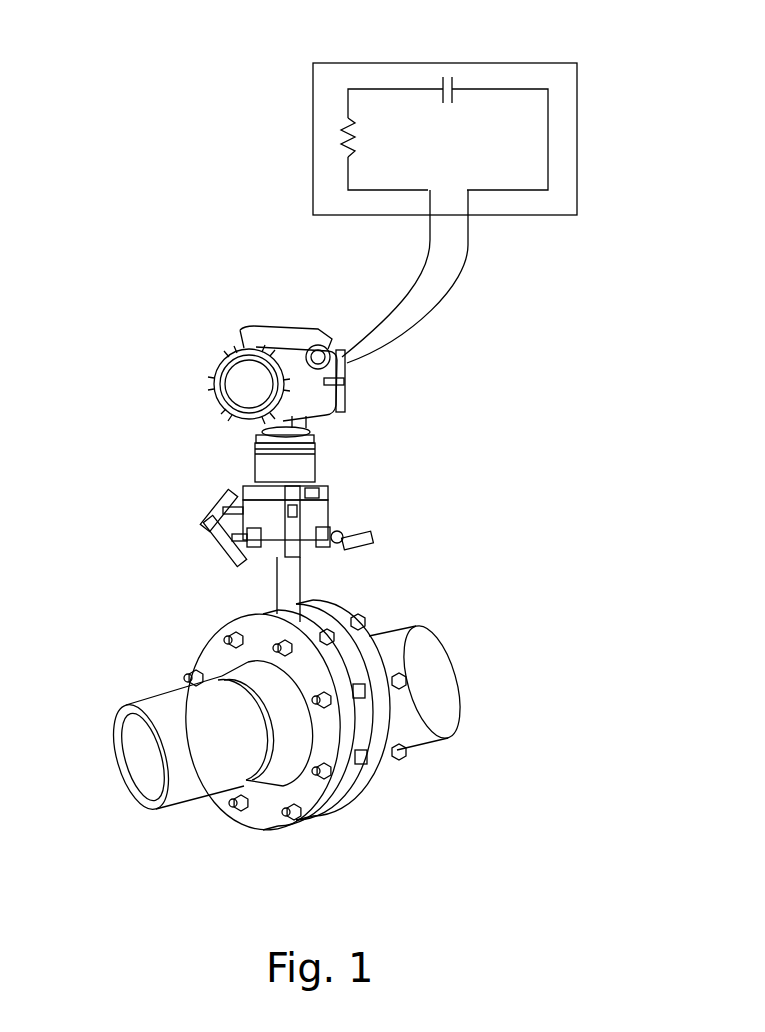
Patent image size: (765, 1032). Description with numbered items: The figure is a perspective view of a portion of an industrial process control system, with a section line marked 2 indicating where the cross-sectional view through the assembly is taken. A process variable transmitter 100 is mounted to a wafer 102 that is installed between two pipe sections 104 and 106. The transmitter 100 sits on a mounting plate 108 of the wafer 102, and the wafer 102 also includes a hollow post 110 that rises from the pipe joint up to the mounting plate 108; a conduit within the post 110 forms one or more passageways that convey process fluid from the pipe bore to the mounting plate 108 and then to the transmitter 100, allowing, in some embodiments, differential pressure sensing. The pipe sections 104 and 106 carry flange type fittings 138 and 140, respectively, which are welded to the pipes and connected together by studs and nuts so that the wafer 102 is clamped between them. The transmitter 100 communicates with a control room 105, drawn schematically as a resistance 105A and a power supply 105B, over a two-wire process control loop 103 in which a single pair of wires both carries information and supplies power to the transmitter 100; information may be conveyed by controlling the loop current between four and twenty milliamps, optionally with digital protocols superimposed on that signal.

The process variable transmitter 100 is at (237, 375).
The wafer 102 is at (352, 580).
The two-wire process control loop 103 is at (457, 267).
The pipe section 104 is at (207, 780).
The control room 105 is at (445, 115).
The resistance 105A is at (340, 135).
The power supply 105B is at (455, 83).
The pipe section 106 is at (435, 707).
The mounting plate 108 is at (337, 530).
The hollow post 110 is at (273, 587).
The fitting 138 is at (332, 808).
The fitting 140 is at (382, 773).
The section line 2- 2 is at (160, 753).